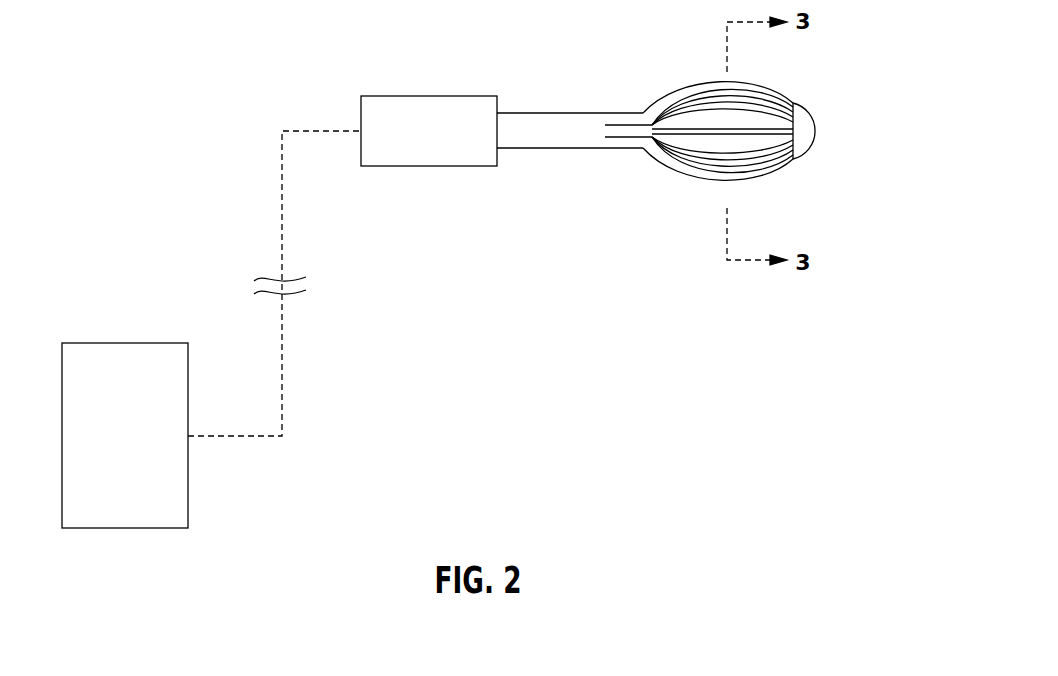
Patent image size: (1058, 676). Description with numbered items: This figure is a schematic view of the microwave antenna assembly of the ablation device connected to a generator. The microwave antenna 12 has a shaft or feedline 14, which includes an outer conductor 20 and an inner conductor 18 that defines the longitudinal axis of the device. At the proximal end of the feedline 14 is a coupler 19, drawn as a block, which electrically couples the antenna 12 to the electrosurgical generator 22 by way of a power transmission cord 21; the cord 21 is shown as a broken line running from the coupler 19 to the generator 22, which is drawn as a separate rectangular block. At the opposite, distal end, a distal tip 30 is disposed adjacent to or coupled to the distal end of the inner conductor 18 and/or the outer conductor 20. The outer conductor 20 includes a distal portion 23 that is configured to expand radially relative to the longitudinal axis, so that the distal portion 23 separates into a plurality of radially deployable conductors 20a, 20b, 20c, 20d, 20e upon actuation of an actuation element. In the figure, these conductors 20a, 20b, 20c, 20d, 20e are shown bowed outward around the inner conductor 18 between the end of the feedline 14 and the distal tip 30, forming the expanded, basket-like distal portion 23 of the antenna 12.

The microwave antenna 12 is at (570, 111).
The feedline 14 is at (581, 149).
The inner conductor 18 is at (717, 137).
The coupler 19 is at (430, 96).
The outer conductor 20 is at (572, 122).
The radially deployable conductor 20a is at (720, 176).
The radially deployable conductor 20b is at (733, 160).
The radially deployable conductor 20c is at (737, 121).
The radially deployable conductor 20d is at (767, 106).
The radially deployable conductor 20e is at (737, 86).
The power transmission cord 21 is at (282, 195).
The electrosurgical generator 22 is at (124, 343).
The distal portion 23 is at (812, 63).
The distal tip 30 is at (807, 128).